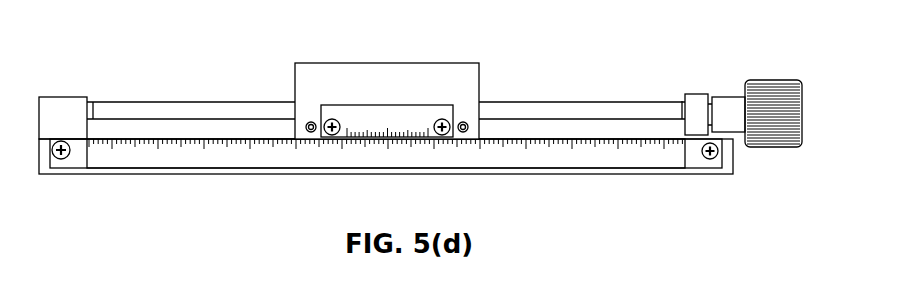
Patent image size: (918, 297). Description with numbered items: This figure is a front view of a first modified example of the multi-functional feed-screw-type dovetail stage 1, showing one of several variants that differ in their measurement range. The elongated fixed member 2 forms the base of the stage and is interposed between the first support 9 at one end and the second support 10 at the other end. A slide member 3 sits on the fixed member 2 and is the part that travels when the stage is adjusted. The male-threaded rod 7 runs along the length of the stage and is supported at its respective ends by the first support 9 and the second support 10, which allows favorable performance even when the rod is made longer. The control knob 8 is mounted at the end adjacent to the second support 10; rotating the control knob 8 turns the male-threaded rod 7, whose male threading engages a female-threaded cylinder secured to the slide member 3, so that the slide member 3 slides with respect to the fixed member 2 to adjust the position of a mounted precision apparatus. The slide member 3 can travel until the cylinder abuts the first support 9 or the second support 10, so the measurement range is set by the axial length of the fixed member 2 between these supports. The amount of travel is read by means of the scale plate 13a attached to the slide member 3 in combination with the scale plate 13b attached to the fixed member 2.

The multi-functional feed-screw-type dovetail stage 1 is at (568, 43).
The fixed member 2 is at (302, 175).
The slide member 3 is at (427, 71).
The male-threaded rod 7 is at (583, 107).
The control knob 8 is at (782, 80).
The first support 9 is at (60, 97).
The second support 10 is at (697, 94).
The scale plate 13a is at (367, 115).
The scale plate 13b is at (396, 160).